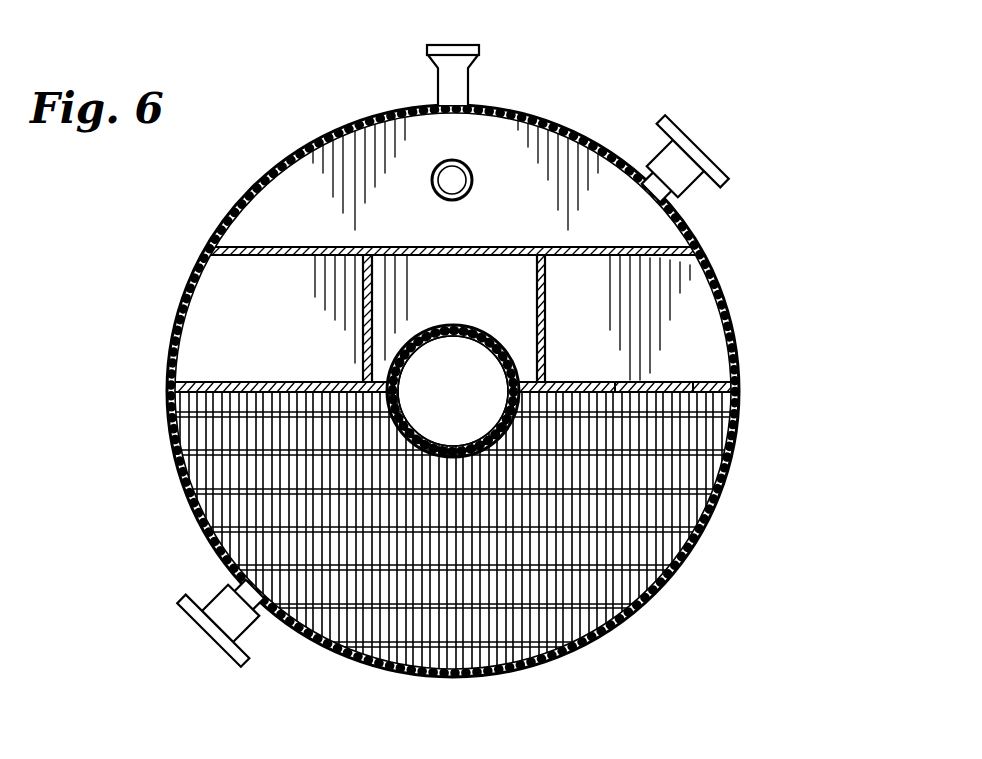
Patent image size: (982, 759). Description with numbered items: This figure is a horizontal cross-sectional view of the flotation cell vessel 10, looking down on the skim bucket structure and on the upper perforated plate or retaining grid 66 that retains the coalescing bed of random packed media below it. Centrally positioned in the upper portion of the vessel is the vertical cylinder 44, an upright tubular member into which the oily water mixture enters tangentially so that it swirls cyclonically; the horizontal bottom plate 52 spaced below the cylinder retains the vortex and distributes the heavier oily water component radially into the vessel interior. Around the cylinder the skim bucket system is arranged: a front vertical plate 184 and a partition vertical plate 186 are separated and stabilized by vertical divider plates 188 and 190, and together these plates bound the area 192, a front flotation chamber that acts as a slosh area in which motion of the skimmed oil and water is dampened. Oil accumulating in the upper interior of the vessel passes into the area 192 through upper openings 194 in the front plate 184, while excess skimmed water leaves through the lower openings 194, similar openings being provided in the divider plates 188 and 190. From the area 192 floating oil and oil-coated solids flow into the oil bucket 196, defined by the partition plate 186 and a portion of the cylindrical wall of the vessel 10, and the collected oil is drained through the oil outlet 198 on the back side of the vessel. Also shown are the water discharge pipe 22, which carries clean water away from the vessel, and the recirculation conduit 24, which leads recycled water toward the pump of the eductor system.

The vessel 10 is at (742, 413).
The water discharge pipe 22 is at (181, 600).
The recirculation conduit 24 is at (692, 150).
The vertical cylinder 44 is at (453, 327).
The horizontal bottom plate 52 is at (477, 357).
The upper perforated plate or retaining grid 66 is at (707, 460).
The front vertical plate 184 is at (242, 380).
The partition vertical plate 186 is at (455, 186).
The vertical divider plate 188 is at (545, 315).
The vertical divider plate 190 is at (363, 333).
The area 192 is at (258, 301).
The openings 194 is at (700, 387).
The oil bucket 196 is at (546, 221).
The oil outlet 198 is at (480, 53).